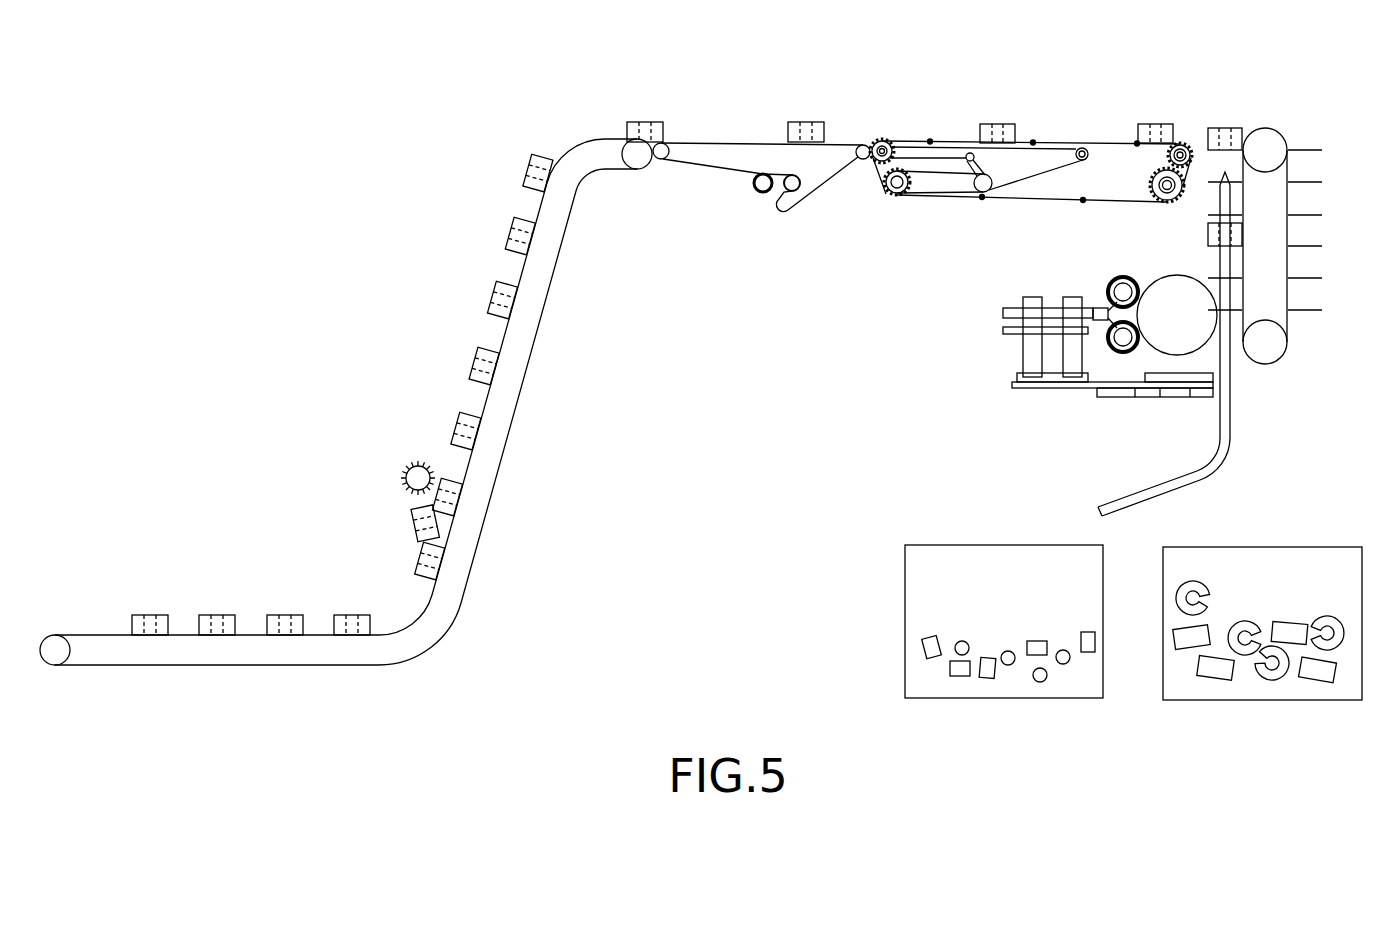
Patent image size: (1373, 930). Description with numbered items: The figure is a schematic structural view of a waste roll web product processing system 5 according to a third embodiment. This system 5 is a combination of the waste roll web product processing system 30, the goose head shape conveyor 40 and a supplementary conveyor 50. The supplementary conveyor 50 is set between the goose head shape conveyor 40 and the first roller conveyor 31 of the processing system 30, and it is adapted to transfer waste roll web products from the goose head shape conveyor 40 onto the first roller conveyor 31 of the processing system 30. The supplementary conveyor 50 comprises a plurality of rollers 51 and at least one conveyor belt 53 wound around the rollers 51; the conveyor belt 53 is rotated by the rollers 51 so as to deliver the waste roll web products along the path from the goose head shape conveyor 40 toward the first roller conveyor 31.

The waste roll web product processing system 5 is at (222, 175).
The waste roll web product processing system 30 is at (1056, 117).
The first roller conveyor 31 is at (907, 140).
The goose head shape conveyor 40 is at (354, 436).
The supplementary conveyor 50 is at (734, 109).
The rollers 51 is at (662, 159).
The conveyor belt 53 is at (711, 167).